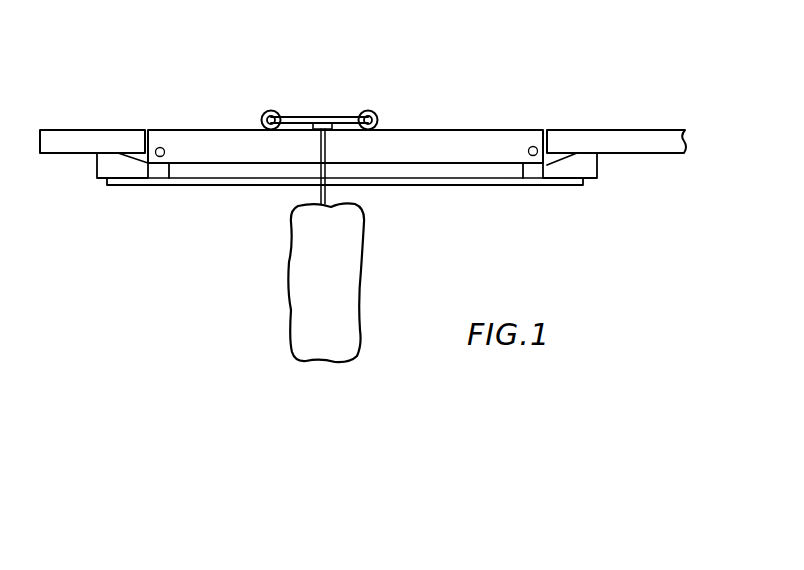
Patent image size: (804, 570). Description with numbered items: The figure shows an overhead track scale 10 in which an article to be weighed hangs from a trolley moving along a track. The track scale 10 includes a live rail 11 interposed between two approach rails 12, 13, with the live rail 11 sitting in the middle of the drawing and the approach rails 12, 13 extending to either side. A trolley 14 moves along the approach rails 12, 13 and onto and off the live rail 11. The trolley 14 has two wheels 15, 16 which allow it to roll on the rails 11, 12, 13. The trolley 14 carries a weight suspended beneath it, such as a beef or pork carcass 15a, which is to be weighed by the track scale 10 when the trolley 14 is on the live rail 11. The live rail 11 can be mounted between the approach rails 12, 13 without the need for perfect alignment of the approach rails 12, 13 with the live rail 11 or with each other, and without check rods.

The track scale 10 is at (470, 110).
The live rail 11 is at (178, 137).
The approach rail 12 is at (69, 138).
The approach rail 13 is at (620, 140).
The trolley 14 is at (325, 113).
The wheel 15 is at (271, 110).
The wheel 16 is at (368, 110).
The carcass 15a is at (347, 277).